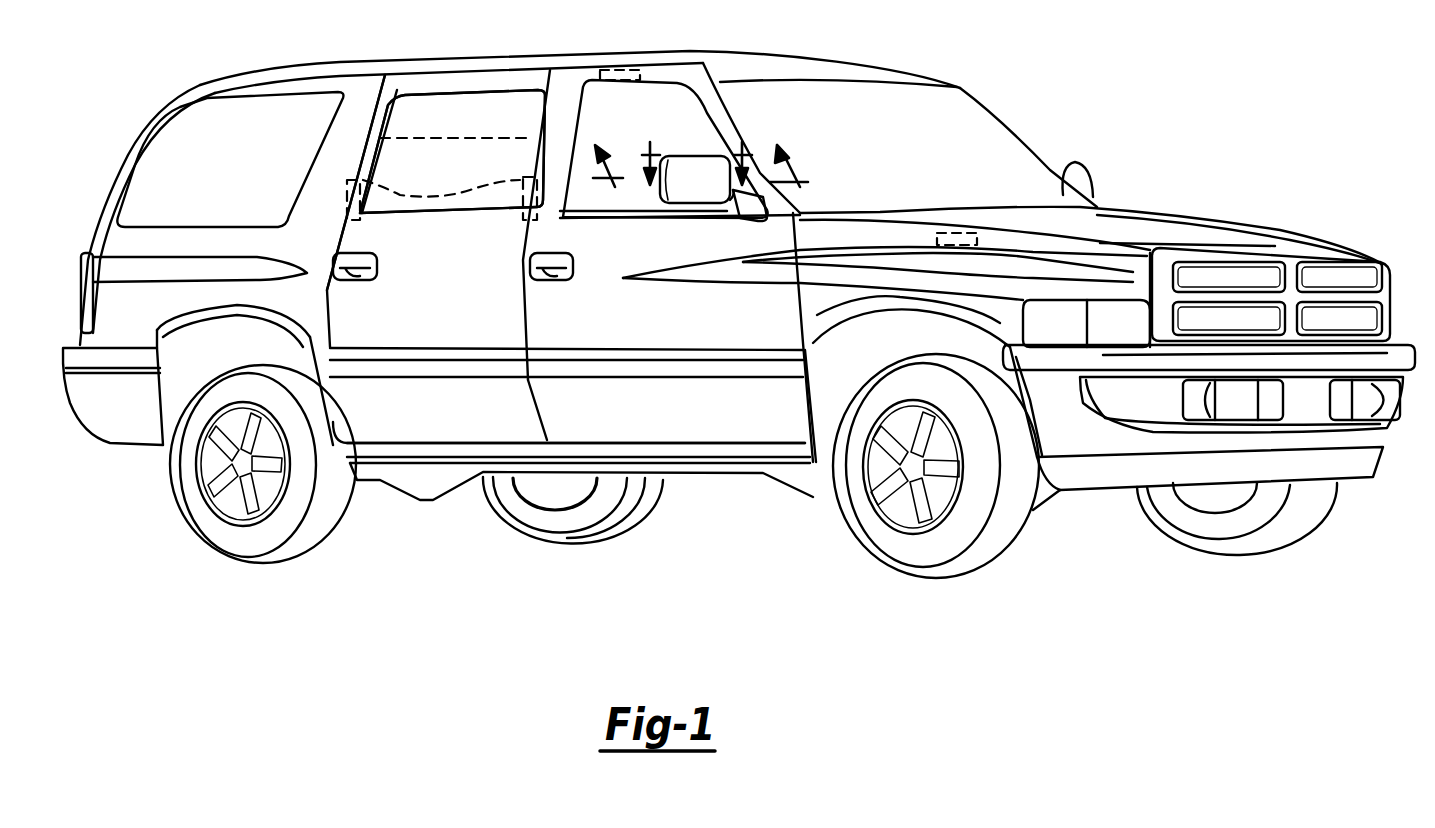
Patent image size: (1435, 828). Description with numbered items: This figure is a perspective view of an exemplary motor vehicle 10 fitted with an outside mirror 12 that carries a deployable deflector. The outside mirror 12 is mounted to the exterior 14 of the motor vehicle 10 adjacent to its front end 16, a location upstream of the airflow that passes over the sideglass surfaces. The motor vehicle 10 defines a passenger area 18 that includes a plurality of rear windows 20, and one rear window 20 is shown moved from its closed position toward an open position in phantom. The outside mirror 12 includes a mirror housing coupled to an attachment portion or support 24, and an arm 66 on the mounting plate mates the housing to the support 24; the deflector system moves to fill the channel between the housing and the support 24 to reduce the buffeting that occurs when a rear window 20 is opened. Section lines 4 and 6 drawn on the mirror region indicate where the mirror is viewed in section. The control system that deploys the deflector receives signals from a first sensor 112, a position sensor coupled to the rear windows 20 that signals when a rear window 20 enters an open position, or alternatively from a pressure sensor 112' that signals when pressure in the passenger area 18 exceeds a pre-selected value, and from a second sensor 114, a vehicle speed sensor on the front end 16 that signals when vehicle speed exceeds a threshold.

The motor vehicle 10 is at (1183, 119).
The outside mirror 12 is at (677, 153).
The exterior 14 is at (718, 474).
The front end 16 is at (1280, 232).
The passenger area 18 is at (480, 118).
The rear windows 20 is at (413, 107).
The support 24 is at (752, 208).
The arm 66 is at (733, 190).
The first sensor 112 is at (442, 179).
The pressure sensor 112' is at (580, 40).
The second sensor 114 is at (947, 232).
The section line 4- 4 is at (699, 158).
The section line 6- 6 is at (699, 174).